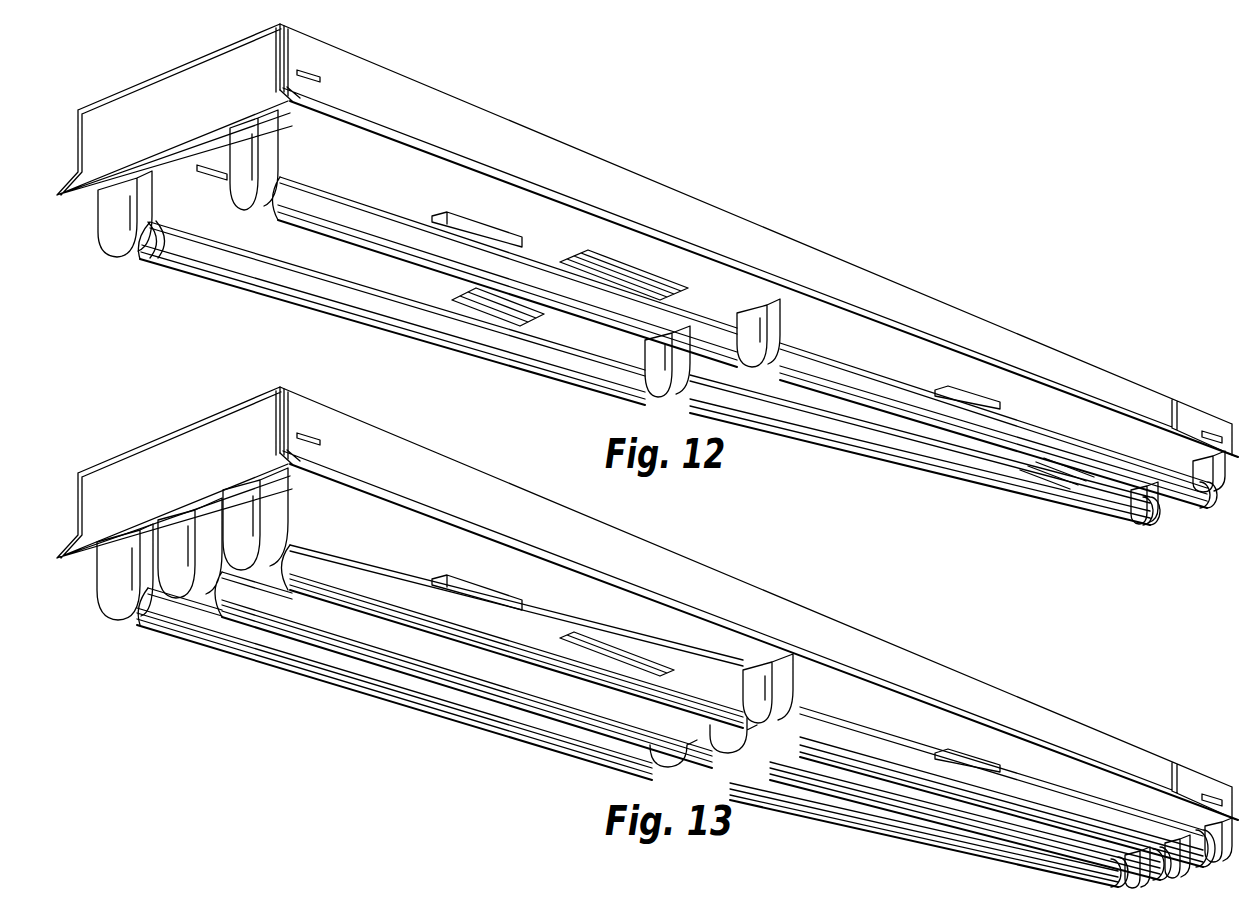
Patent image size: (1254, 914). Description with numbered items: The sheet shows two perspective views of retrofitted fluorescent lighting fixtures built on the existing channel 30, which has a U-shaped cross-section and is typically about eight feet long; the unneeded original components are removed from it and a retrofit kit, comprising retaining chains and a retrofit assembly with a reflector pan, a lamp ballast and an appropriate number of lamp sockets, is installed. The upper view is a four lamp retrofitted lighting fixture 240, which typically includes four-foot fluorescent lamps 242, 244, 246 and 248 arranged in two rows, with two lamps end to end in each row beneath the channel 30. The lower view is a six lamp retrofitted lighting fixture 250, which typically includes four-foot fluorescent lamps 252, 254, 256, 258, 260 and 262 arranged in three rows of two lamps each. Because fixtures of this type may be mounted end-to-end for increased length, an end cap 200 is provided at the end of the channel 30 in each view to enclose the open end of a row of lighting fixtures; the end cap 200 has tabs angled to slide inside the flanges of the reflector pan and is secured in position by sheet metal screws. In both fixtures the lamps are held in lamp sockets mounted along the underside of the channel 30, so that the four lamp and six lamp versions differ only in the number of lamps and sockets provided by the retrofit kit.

In FIG. 12, the end cap 200 is at (188, 82).
In FIG. 13, the end cap 200 is at (196, 445).
In FIG. 12, the channel 30 is at (492, 113).
In FIG. 13, the channel 30 is at (480, 476).
In FIG. 12, the four lamp retrofitted lighting fixture 240 is at (732, 193).
In FIG. 12, the fluorescent lamp 242 is at (345, 233).
In FIG. 12, the fluorescent lamp 244 is at (372, 312).
In FIG. 12, the fluorescent lamp 246 is at (948, 415).
In FIG. 12, the fluorescent lamp 248 is at (982, 473).
In FIG. 13, the six lamp retrofitted lighting fixture 250 is at (735, 568).
In FIG. 13, the fluorescent lamp 252 is at (322, 676).
In FIG. 13, the fluorescent lamp 254 is at (468, 668).
In FIG. 13, the fluorescent lamp 256 is at (572, 657).
In FIG. 13, the fluorescent lamp 258 is at (868, 815).
In FIG. 13, the fluorescent lamp 260 is at (955, 808).
In FIG. 13, the fluorescent lamp 262 is at (1040, 807).